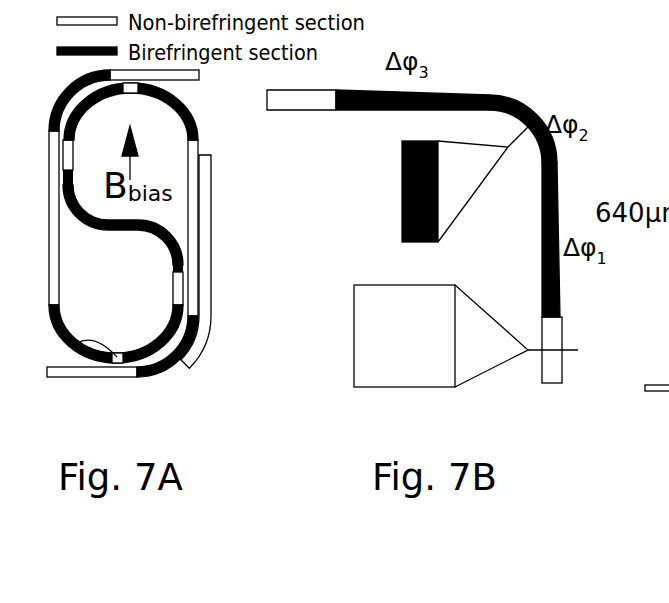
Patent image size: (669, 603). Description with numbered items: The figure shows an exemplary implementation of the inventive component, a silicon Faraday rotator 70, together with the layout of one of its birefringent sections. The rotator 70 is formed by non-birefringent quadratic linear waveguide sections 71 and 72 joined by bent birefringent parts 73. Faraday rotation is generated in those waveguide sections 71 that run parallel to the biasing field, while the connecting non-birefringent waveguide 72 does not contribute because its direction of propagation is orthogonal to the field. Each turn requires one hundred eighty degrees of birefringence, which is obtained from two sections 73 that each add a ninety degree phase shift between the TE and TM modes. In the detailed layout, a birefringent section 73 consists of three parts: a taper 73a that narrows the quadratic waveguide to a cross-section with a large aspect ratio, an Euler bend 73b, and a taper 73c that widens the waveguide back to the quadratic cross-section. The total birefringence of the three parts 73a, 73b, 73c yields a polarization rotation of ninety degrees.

In FIG. 7A, the silicon Faraday rotator 70 is at (140, 250).
In FIG. 7B, the silicon Faraday rotator 70 is at (657, 417).
In FIG. 7A, the non-birefringent quadratic linear waveguide section 71 is at (190, 205).
In FIG. 7B, the non-birefringent quadratic linear waveguide section 71 is at (548, 358).
In FIG. 7A, the non-birefringent waveguide 72 is at (135, 368).
In FIG. 7B, the non-birefringent waveguide 72 is at (290, 97).
In FIG. 7A, the birefringent section 73 is at (130, 222).
In FIG. 7B, the taper 73a is at (413, 92).
In FIG. 7B, the Euler bend 73b is at (558, 167).
In FIG. 7B, the taper 73c is at (558, 285).